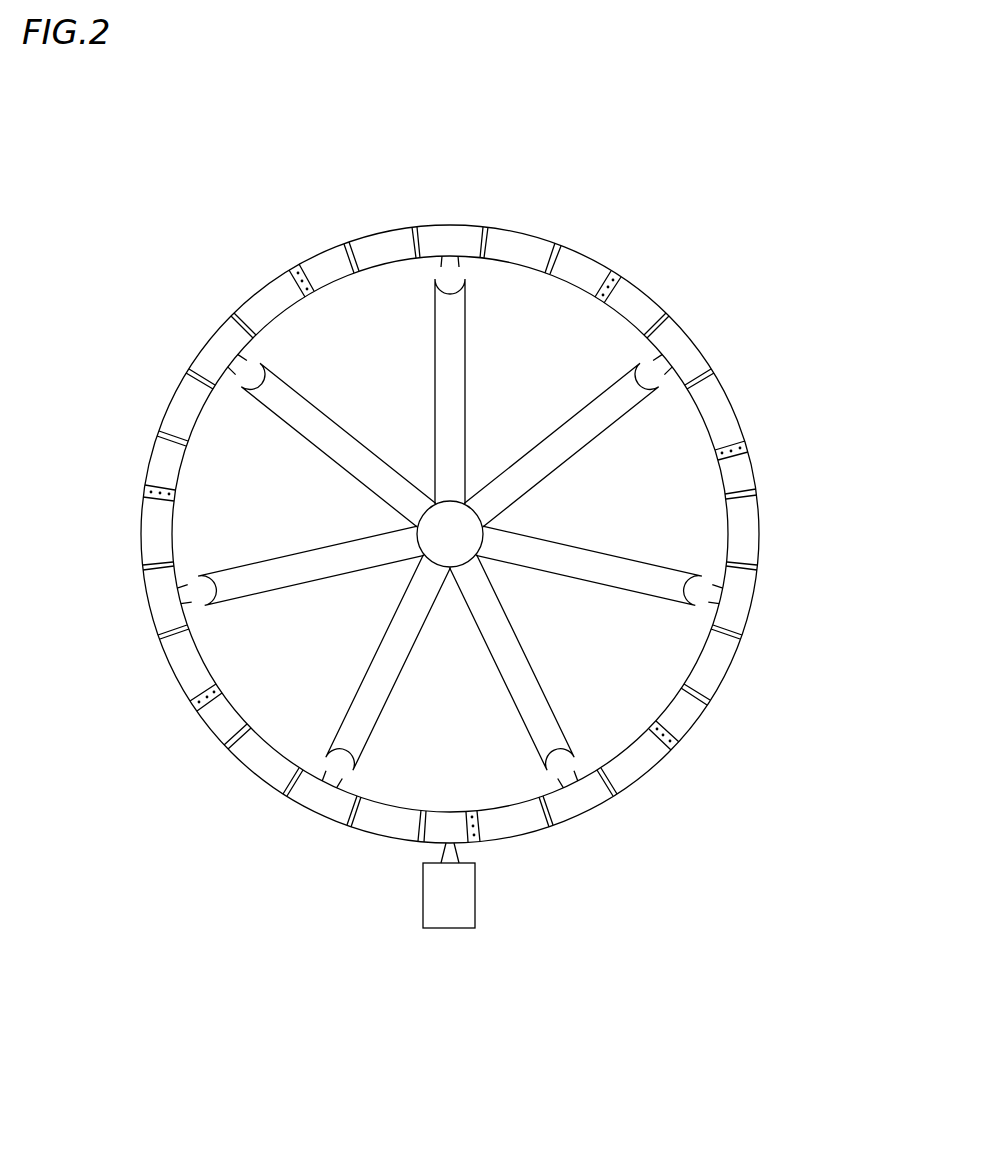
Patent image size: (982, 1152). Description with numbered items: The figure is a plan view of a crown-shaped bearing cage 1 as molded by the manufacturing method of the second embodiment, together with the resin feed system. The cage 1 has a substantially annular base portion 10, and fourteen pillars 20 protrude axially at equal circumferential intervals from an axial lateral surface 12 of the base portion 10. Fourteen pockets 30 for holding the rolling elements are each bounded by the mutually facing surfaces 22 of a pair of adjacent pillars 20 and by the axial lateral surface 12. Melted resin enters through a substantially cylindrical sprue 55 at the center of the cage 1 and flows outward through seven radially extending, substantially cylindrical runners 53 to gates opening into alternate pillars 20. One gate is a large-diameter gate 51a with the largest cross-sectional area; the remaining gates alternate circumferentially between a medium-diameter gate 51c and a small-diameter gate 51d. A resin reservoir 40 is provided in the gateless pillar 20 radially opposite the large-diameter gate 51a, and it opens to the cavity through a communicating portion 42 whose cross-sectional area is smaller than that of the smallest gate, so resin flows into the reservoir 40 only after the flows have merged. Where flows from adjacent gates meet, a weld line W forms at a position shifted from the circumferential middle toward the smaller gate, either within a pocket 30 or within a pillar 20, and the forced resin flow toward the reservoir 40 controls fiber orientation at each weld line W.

The bearing cage 1 is at (693, 138).
The base portion 10 is at (731, 394).
The axial lateral surface 12 is at (706, 413).
The pillar 20 is at (470, 240).
The mutually facing surface 22 is at (746, 506).
The pocket 30 is at (742, 530).
The resin reservoir 40 is at (455, 932).
The communicating portion 42 is at (455, 818).
The large-diameter gate 51a is at (454, 228).
The medium-diameter gate 51c is at (240, 340).
The small-diameter gate 51d is at (690, 352).
The runner 53 is at (438, 373).
The sprue 55 is at (437, 526).
The weld line W is at (313, 279).